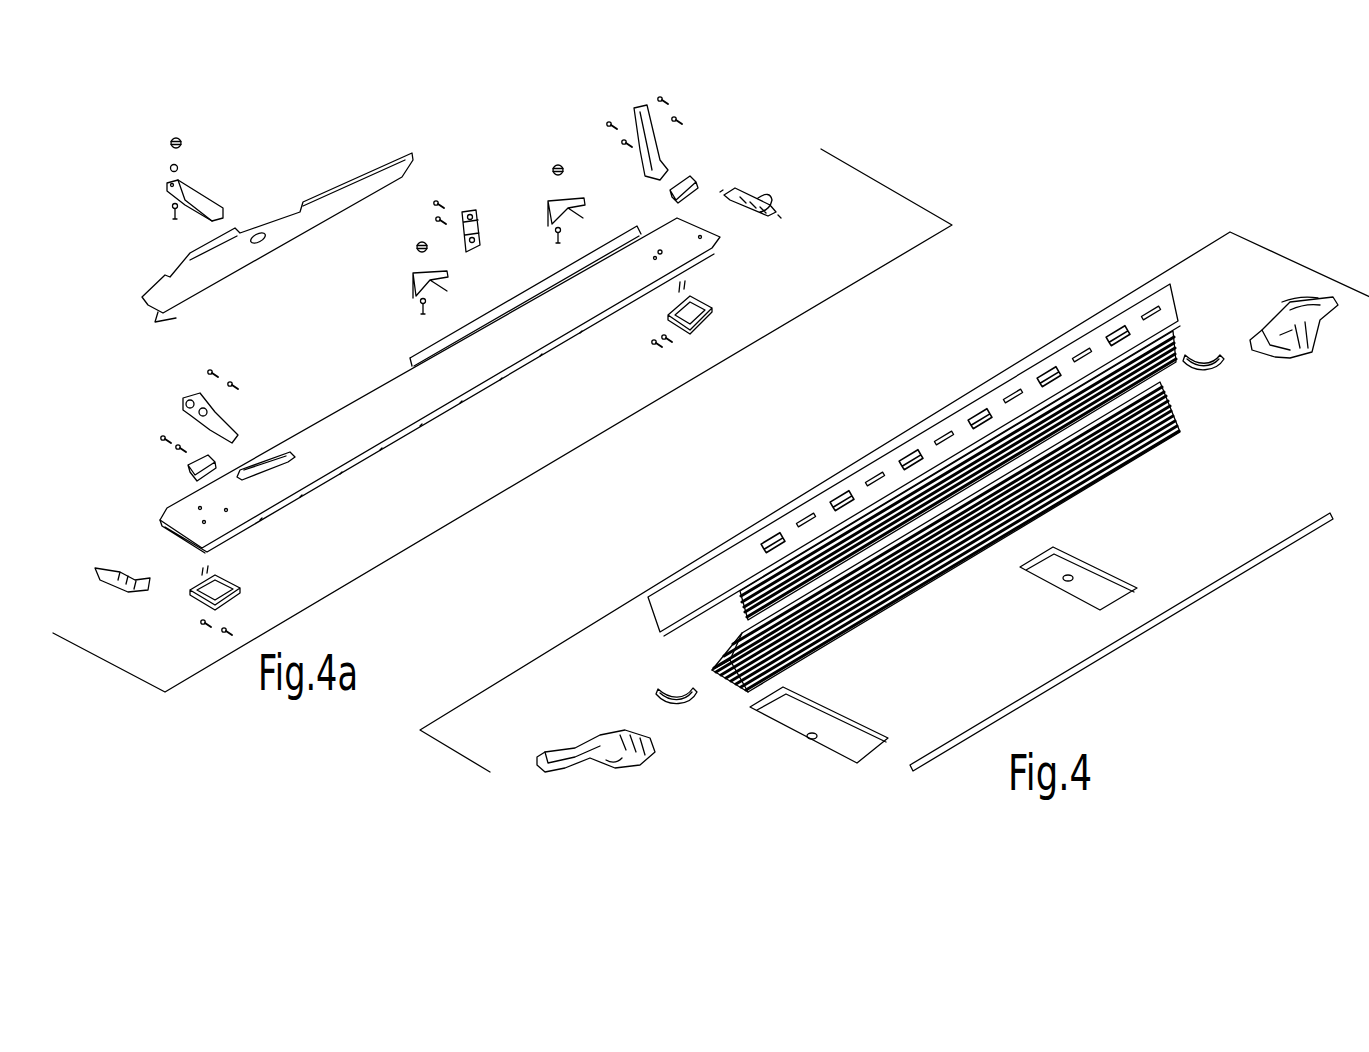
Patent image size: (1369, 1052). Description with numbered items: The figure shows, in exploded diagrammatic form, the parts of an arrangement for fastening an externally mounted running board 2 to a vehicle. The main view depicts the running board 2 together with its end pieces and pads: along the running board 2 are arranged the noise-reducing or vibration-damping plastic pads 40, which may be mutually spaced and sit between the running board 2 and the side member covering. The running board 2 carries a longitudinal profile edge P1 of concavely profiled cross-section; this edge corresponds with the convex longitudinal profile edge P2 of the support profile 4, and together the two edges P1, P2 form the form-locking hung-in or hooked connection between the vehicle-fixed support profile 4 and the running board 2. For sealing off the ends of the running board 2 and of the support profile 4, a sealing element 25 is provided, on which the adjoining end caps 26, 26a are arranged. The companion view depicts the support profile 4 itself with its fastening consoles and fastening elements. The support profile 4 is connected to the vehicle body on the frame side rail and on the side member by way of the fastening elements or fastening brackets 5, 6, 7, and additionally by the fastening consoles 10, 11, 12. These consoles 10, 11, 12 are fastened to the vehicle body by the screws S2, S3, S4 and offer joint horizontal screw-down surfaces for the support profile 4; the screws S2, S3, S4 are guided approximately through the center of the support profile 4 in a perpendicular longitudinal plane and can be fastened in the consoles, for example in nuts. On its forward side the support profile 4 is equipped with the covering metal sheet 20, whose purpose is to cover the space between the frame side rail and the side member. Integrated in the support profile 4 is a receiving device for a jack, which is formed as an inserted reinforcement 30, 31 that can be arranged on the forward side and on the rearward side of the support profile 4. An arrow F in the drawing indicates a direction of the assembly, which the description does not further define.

In FIG. 4, the running board 2 is at (1160, 427).
In FIG. 4a, the support profile 4 is at (378, 415).
In FIG. 4a, the fastening element 5 is at (203, 192).
In FIG. 4a, the fastening element 6 is at (413, 276).
In FIG. 4a, the fastening element 7 is at (574, 204).
In FIG. 4a, the fastening console 10 is at (236, 416).
In FIG. 4a, the fastening console 11 is at (476, 215).
In FIG. 4a, the fastening console 12 is at (658, 152).
In FIG. 4a, the covering metal sheet 20 is at (285, 225).
In FIG. 4, the sealing element 25 is at (683, 703).
In FIG. 4, the end cap 26 is at (612, 765).
In FIG. 4a, the end cap 26a is at (752, 191).
In FIG. 4a, the inserted reinforcement 30 is at (708, 306).
In FIG. 4a, the inserted reinforcement 31 is at (232, 592).
In FIG. 4, the plastic pads 40 is at (1108, 332).
In FIG. 4a, the screw S2 is at (613, 122).
In FIG. 4a, the screw S3 is at (438, 200).
In FIG. 4a, the screw S4 is at (226, 368).
In FIG. 4, the longitudinal profile edge P1 is at (705, 661).
In FIG. 4a, the longitudinal profile edge P2 is at (300, 503).
In FIG. 4a, the direction of travel F is at (360, 43).